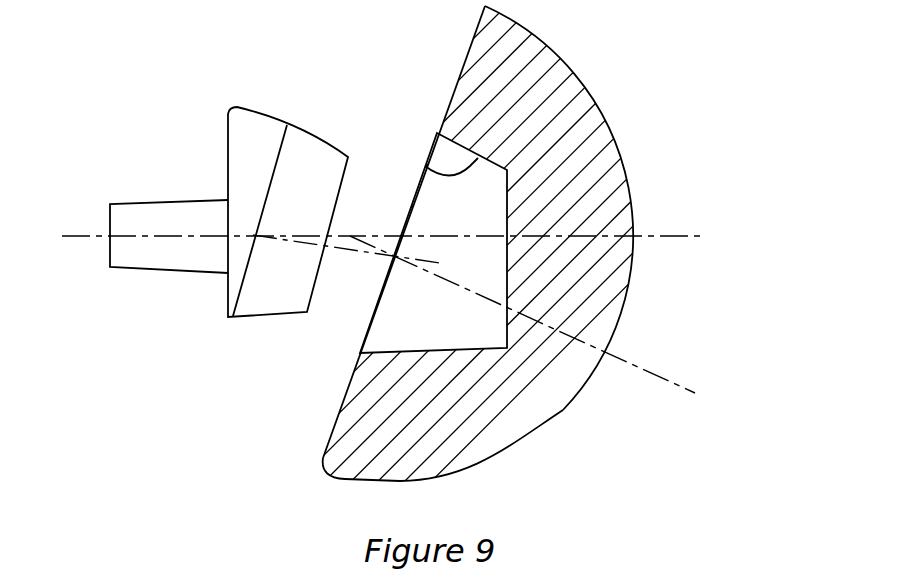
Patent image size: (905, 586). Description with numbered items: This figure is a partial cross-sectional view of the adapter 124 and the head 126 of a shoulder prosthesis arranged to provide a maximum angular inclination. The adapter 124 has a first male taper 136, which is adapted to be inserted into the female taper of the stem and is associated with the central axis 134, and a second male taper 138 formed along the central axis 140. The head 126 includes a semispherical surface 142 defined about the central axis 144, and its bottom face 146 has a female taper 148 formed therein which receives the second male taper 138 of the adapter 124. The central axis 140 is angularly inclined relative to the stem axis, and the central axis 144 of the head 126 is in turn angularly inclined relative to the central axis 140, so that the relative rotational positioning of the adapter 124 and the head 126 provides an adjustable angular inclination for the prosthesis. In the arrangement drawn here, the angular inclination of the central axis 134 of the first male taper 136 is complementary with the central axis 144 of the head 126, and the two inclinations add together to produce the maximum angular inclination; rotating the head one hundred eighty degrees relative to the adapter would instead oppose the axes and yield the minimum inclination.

The adapter 124 is at (197, 92).
The head 126 is at (417, 452).
The central axis 134 is at (96, 236).
The first male taper 136 is at (153, 263).
The second male taper 138 is at (317, 153).
The central axis 140 is at (348, 250).
The semispherical surface 142 is at (595, 96).
The central axis 144 is at (657, 373).
The bottom face 146 is at (467, 48).
The female taper 148 is at (425, 166).